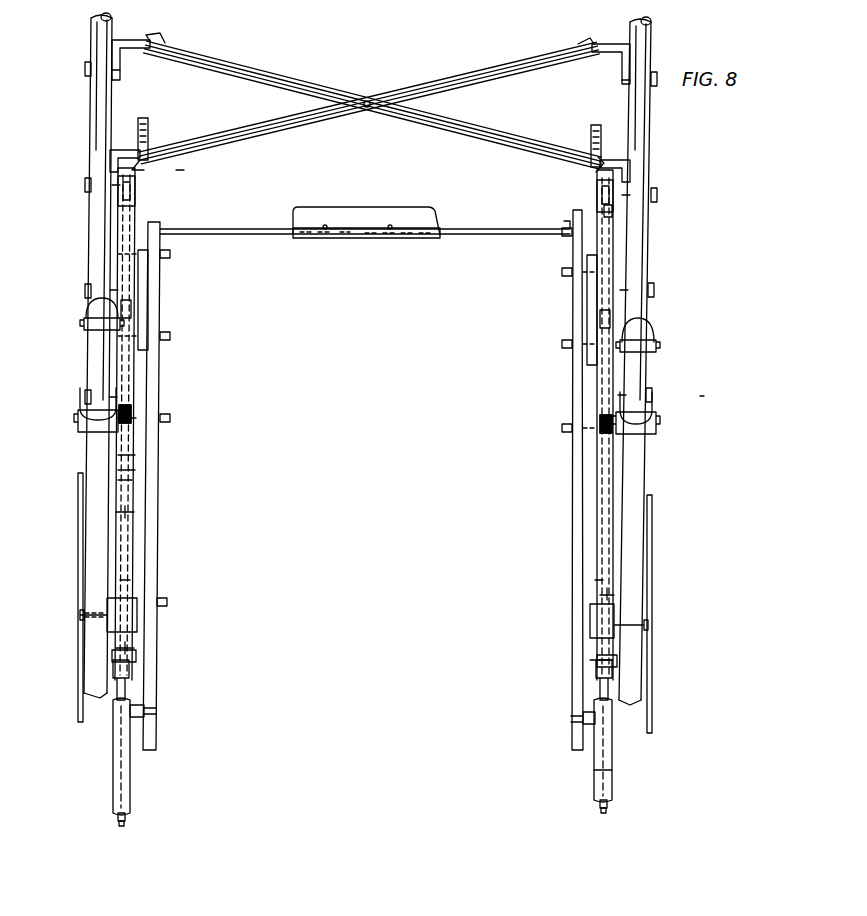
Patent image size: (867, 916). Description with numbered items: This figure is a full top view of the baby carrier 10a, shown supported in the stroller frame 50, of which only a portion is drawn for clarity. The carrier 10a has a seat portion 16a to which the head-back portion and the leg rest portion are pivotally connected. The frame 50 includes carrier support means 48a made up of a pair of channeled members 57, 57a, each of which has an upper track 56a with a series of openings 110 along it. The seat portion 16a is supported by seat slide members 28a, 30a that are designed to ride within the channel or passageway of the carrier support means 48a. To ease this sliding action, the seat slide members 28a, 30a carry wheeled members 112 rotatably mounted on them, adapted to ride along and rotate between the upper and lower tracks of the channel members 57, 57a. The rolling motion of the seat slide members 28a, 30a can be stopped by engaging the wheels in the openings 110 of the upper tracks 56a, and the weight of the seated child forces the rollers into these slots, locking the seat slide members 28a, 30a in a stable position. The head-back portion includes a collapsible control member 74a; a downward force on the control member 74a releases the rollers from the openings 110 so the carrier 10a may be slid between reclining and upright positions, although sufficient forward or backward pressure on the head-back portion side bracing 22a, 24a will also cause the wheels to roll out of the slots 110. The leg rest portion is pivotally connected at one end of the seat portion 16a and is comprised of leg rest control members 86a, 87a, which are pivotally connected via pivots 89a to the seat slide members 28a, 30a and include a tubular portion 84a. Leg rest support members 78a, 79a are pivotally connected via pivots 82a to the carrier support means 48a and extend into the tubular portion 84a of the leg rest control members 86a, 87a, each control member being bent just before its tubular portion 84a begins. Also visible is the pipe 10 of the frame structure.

The pipe 10 is at (140, 381).
The carrier 10a is at (720, 396).
The seat portion 16a is at (170, 299).
The head-back portion side bracing 22a is at (150, 118).
The head-back portion side bracing 24a is at (591, 127).
The seat slide member 28a is at (155, 605).
The seat slide member 30a is at (573, 644).
The carrier support means 48a is at (127, 516).
The stroller frame 50 is at (100, 122).
The upper track 56a is at (596, 517).
The channeled member 57 is at (125, 582).
The channeled member 57a is at (597, 581).
The collapsible control member 74a is at (360, 260).
The leg rest support member 78a is at (120, 690).
The leg rest support member 79a is at (610, 702).
The pivot 82a is at (136, 655).
The tubular portion 84a is at (633, 789).
The leg rest control member 86a is at (131, 762).
The leg rest control member 87a is at (593, 779).
The pivot 89a is at (156, 710).
The opening 110 is at (120, 305).
The wheeled member 112 is at (130, 412).